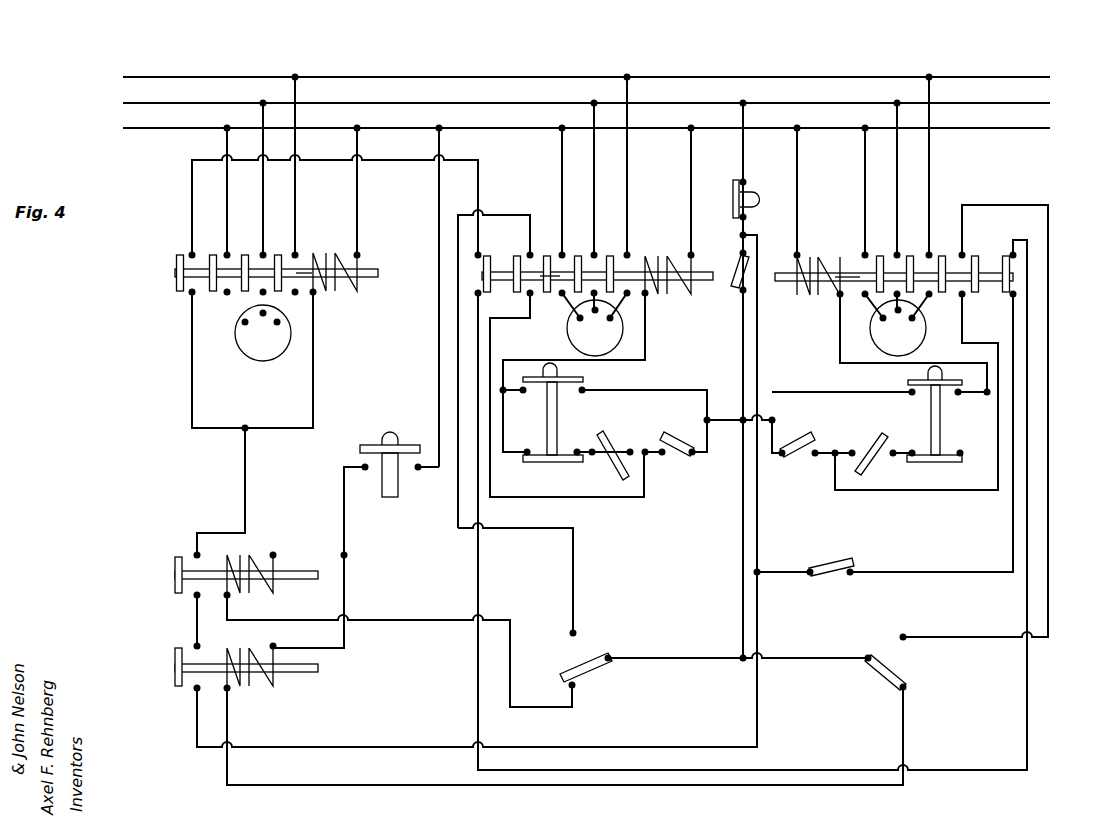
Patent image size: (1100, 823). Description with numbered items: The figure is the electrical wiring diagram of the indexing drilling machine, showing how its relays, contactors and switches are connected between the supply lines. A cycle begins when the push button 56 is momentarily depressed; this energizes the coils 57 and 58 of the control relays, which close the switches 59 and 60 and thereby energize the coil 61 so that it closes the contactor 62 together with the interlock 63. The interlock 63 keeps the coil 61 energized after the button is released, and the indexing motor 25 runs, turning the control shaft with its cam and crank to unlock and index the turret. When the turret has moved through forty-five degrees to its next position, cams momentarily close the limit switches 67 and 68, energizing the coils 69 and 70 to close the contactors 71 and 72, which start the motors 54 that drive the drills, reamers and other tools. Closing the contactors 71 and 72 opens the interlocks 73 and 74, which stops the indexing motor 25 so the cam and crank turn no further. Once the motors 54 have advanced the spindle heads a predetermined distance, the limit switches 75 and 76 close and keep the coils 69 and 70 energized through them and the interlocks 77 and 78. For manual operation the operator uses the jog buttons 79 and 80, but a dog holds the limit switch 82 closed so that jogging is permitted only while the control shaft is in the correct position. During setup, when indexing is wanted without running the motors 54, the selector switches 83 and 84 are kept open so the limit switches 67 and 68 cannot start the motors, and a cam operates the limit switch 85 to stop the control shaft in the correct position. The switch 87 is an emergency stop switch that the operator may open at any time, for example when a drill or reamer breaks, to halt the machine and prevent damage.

The indexing motor 25 is at (272, 355).
The motors 54 is at (582, 338).
The push button 56 is at (391, 436).
The coil of control relay 57 is at (262, 588).
The coil of control relay 58 is at (262, 682).
The switch 59 is at (176, 576).
The switch 60 is at (176, 668).
The coil 61 is at (348, 286).
The contactor 62 is at (303, 270).
The interlock 63 is at (177, 273).
The limit switch 67 is at (797, 446).
The limit switch 68 is at (684, 444).
The coil 69 is at (797, 282).
The coil 70 is at (645, 262).
The contactor 71 is at (853, 272).
The contactor 72 is at (563, 272).
The interlock 73 is at (1013, 277).
The interlock 74 is at (482, 273).
The limit switch 75 is at (888, 676).
The limit switch 76 is at (588, 670).
The interlock 77 is at (963, 297).
The interlock 78 is at (528, 296).
The jog button 79 is at (962, 470).
The jog button 80 is at (557, 463).
The limit switch 82 is at (737, 264).
The selector switch 83 is at (866, 462).
The selector switch 84 is at (627, 482).
The limit switch 85 is at (832, 565).
The emergency stop switch 87 is at (733, 196).